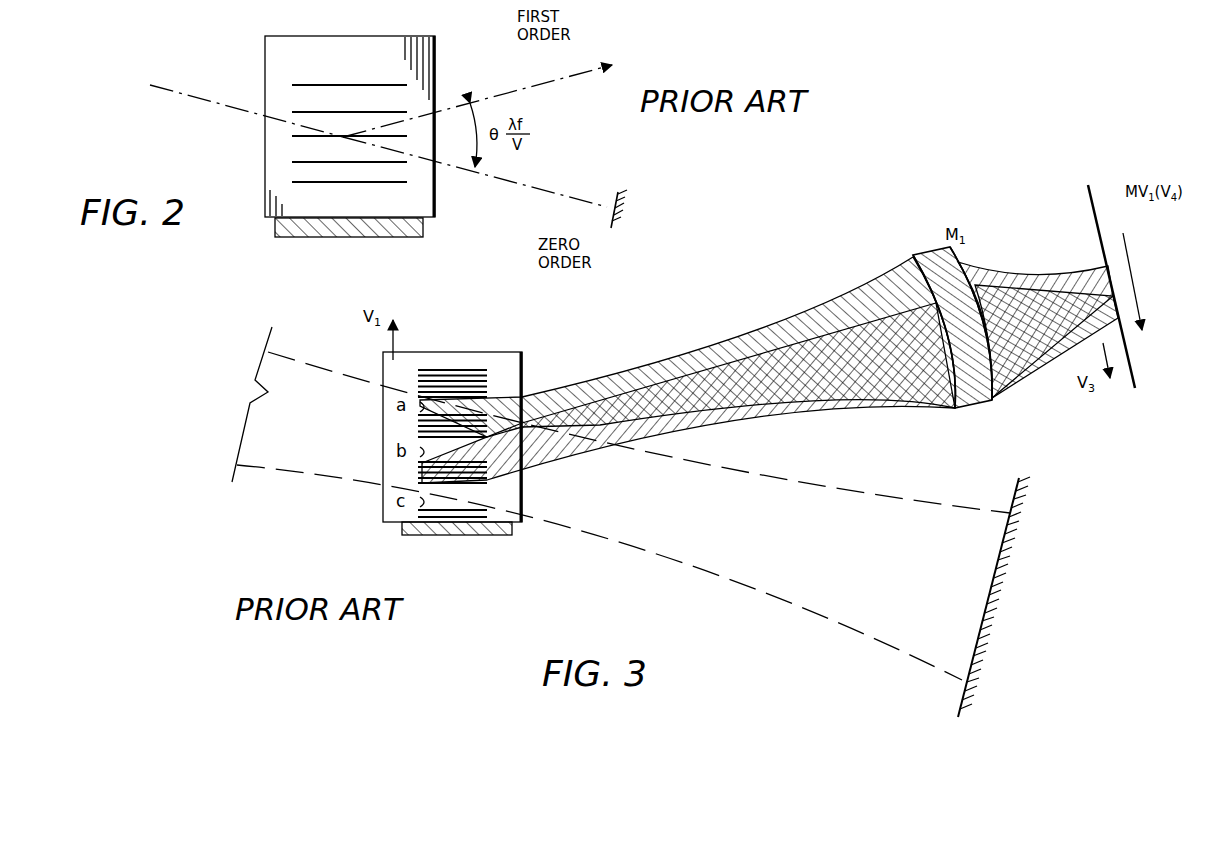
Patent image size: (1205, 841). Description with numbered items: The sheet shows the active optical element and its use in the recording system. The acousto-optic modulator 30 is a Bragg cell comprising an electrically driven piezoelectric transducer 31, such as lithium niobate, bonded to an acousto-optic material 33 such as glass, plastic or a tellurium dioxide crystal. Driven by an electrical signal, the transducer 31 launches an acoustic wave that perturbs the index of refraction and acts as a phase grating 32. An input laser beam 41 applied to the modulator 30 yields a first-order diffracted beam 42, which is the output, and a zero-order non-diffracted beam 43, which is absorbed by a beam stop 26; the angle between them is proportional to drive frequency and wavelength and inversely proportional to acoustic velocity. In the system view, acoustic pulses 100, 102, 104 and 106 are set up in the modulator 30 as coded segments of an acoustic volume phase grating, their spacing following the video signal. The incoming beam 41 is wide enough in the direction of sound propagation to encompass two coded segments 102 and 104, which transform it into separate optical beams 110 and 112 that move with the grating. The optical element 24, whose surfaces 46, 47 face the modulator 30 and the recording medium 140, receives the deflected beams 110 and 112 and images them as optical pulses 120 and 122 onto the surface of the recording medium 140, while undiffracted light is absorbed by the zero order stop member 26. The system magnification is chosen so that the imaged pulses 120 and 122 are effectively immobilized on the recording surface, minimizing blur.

In FIG. 3, the optical element 24 is at (957, 324).
In FIG. 2, the zero order stop member 26 is at (607, 195).
In FIG. 3, the zero order stop member 26 is at (1015, 498).
In FIG. 2, the acousto-optic modulator 30 is at (324, 137).
In FIG. 3, the acousto-optic modulator 30 is at (451, 446).
In FIG. 2, the piezoelectric transducer 31 is at (291, 238).
In FIG. 3, the piezoelectric transducer 31 is at (510, 536).
In FIG. 2, the phase grating 32 is at (338, 183).
In FIG. 2, the acousto-optic material 33 is at (268, 57).
In FIG. 2, the input laser beam 41 is at (216, 105).
In FIG. 3, the input laser beam 41 is at (325, 385).
In FIG. 2, the first-order diffracted beam 42 is at (490, 95).
In FIG. 2, the zero-order non-diffracted beam 43 is at (507, 185).
In FIG. 3, the lens first surface 46 is at (957, 412).
In FIG. 3, the lens second surface 47 is at (994, 401).
In FIG. 3, the acoustic pulse 100 is at (488, 372).
In FIG. 3, the acoustic pulse 102 is at (428, 440).
In FIG. 3, the acoustic pulse 104 is at (418, 480).
In FIG. 3, the acoustic pulse 106 is at (493, 510).
In FIG. 3, the optical beam 110 is at (655, 376).
In FIG. 3, the optical beam 112 is at (701, 430).
In FIG. 3, the optical pulse 120 is at (1098, 331).
In FIG. 3, the optical pulse 122 is at (1105, 265).
In FIG. 3, the recording medium 140 is at (1130, 384).